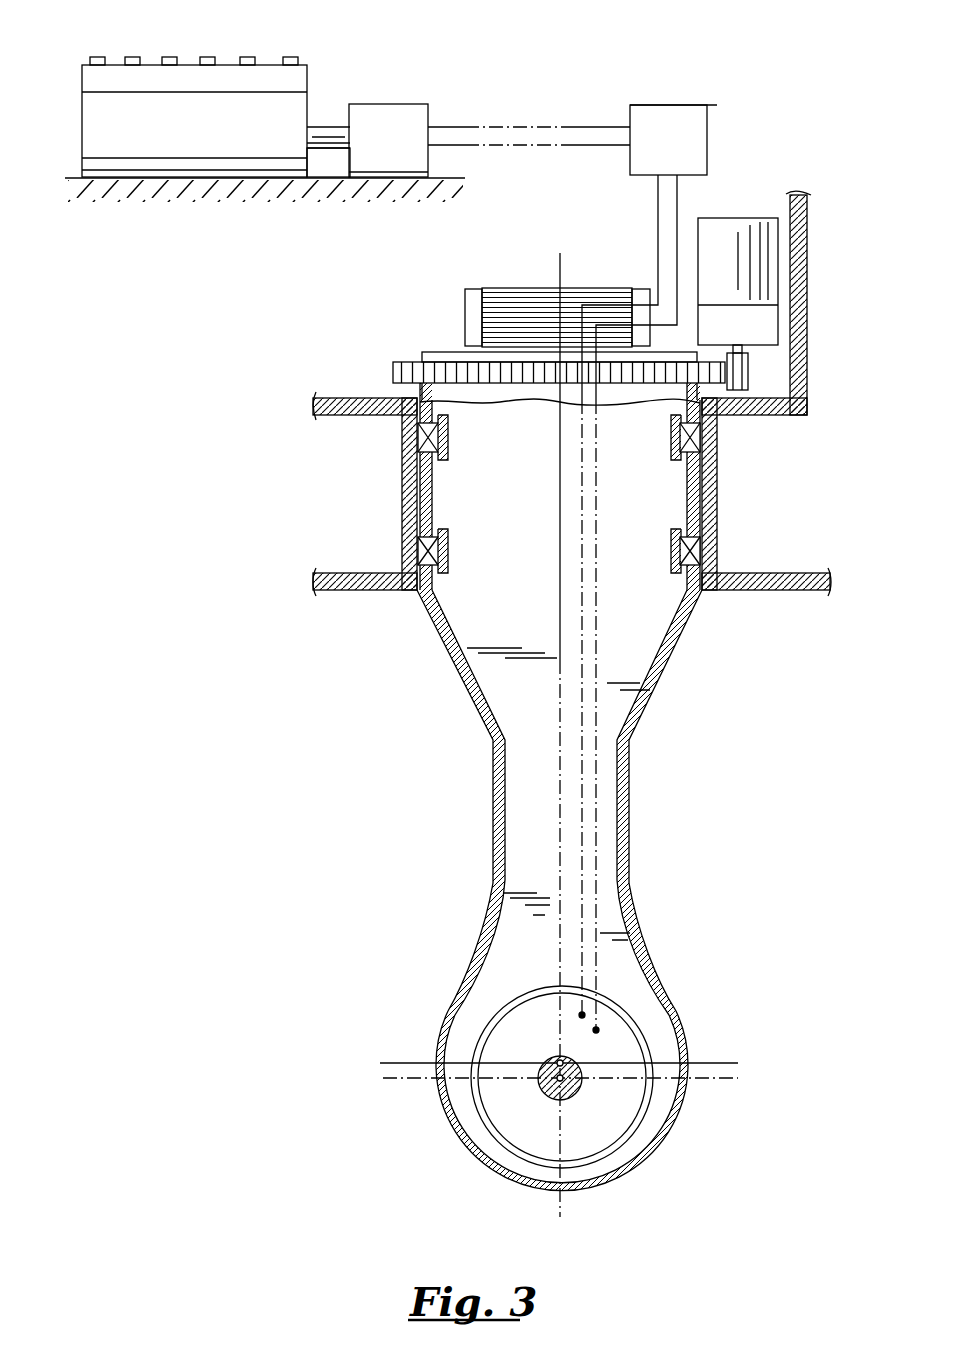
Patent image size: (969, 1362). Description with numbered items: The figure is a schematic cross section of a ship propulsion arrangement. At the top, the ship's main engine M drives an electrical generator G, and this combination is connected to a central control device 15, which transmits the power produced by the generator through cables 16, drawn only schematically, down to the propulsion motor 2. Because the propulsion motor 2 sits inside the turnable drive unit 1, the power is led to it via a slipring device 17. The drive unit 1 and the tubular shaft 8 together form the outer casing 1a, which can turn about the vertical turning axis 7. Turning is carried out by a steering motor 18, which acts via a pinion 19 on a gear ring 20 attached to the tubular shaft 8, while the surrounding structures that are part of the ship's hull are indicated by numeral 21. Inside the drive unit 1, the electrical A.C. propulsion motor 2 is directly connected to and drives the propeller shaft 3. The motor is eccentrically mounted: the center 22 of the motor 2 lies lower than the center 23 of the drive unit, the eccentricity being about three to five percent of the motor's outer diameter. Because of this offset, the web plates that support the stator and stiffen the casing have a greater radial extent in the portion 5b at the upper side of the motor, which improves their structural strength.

The main engine M is at (222, 105).
The electrical generator G is at (388, 123).
The central control device 15 is at (668, 122).
The cables 16 is at (583, 732).
The slipring device 17 is at (468, 315).
The steering motor 18 is at (760, 270).
The pinion 19 is at (748, 368).
The gear ring 20 is at (393, 370).
The vertical turning axis 7 is at (558, 508).
The tubular shaft 8 is at (700, 495).
The ship's hull structures 21 is at (778, 582).
The drive unit 1 is at (368, 823).
The outer casing 1a is at (680, 1103).
The upper portion of web plates 5b is at (472, 1015).
The propulsion motor 2 is at (627, 1050).
The propeller shaft 3 is at (580, 1097).
The center of the motor 22 is at (562, 1095).
The center of the drive unit 23 is at (559, 1061).